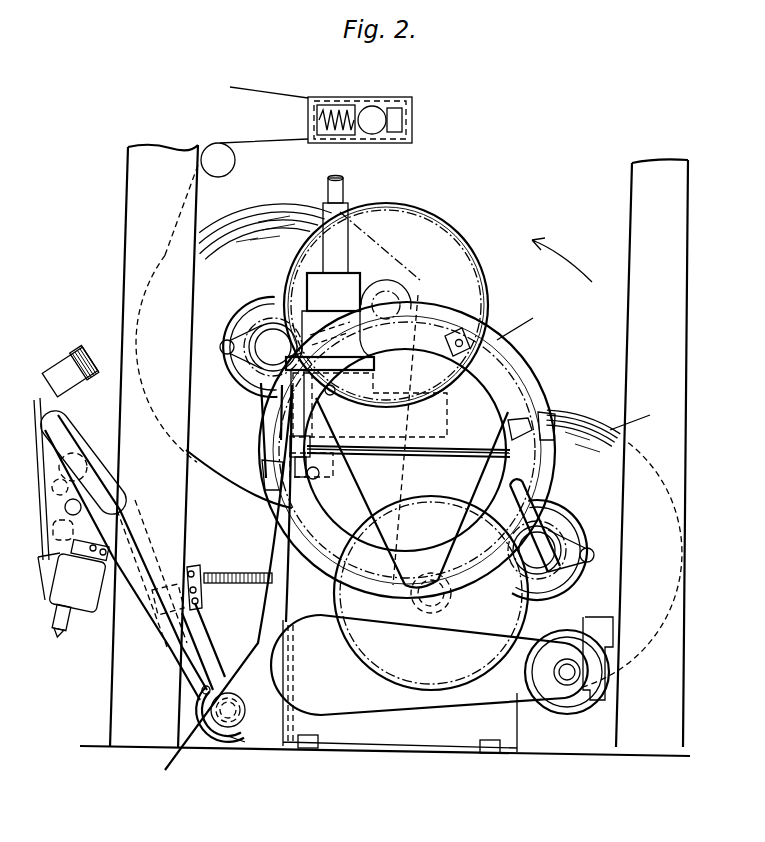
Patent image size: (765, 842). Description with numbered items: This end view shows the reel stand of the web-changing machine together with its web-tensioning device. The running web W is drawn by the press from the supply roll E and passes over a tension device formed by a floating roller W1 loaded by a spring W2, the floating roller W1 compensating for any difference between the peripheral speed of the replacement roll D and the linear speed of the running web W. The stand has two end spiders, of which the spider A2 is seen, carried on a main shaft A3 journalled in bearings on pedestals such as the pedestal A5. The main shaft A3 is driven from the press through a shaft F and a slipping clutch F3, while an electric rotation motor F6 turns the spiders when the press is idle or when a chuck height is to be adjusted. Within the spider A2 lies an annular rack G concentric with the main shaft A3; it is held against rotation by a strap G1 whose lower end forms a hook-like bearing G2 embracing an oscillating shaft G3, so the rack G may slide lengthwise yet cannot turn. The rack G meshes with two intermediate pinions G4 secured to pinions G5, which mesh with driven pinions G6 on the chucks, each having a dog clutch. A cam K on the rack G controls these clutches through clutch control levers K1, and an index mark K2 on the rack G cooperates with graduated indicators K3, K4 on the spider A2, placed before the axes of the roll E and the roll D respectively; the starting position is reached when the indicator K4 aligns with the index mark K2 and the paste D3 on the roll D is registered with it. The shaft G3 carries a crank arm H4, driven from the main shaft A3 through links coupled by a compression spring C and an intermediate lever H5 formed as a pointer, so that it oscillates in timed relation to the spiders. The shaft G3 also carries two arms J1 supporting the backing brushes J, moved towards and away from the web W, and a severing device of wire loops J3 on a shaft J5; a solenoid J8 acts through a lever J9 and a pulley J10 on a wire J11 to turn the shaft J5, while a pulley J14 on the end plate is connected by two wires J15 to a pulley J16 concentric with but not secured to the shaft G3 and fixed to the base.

The running web W is at (250, 140).
The floating roller W1 is at (373, 105).
The spring W2 is at (333, 100).
The supply roll E is at (262, 212).
The shaft F is at (345, 197).
The slipping clutch F3 is at (298, 405).
The rotation motor F6 is at (572, 706).
The annular rack G is at (403, 333).
The strap G1 is at (287, 567).
The hook-like bearing G2 is at (202, 743).
The oscillating shaft G3 is at (240, 745).
The intermediate pinions G4 is at (400, 290).
The pinions G5 is at (450, 227).
The driven pinions G6 is at (258, 322).
The clutch control cam K is at (455, 333).
The clutch control levers K1 is at (310, 370).
The index mark K2 is at (512, 422).
The indicator K3 is at (270, 488).
The indicator K4 is at (546, 412).
The end spider A2 is at (527, 323).
The main shaft A3 is at (393, 472).
The pedestal A5 is at (372, 733).
The replacement roll D is at (639, 419).
The adhesive D3 is at (578, 410).
The crank arm H4 is at (217, 627).
The intermediate lever H5 is at (194, 573).
The compression spring C is at (238, 593).
The backing brushes J is at (75, 348).
The arms J1 is at (95, 490).
The wire loops J3 is at (46, 414).
The shaft J5 is at (52, 484).
The solenoid J8 is at (75, 592).
The lever J9 is at (70, 547).
The pulley J10 is at (53, 533).
The wire J11 is at (64, 510).
The pulley J14 is at (88, 452).
The wires J15 is at (125, 508).
The pulley J16 is at (205, 693).